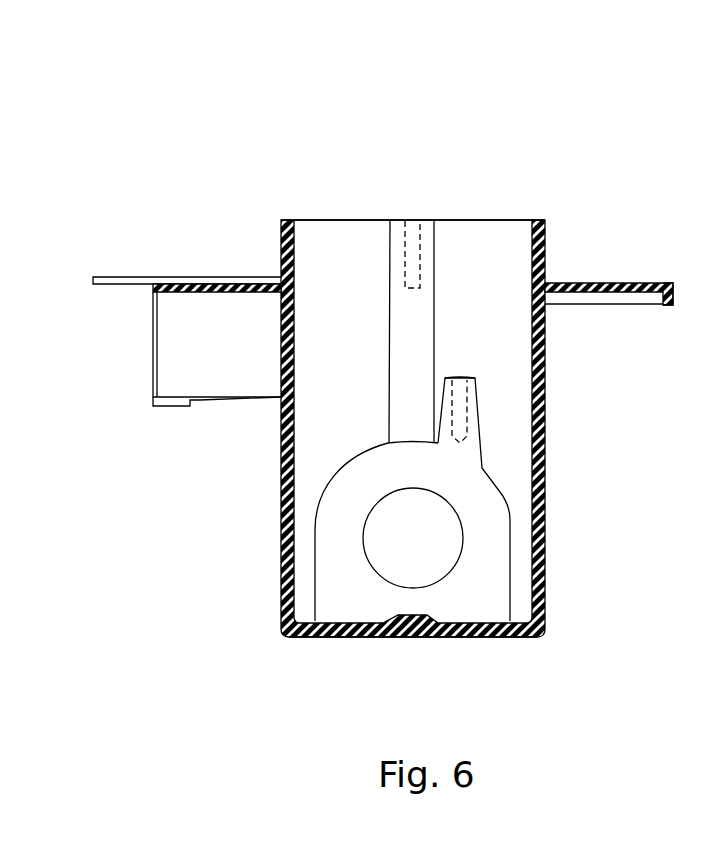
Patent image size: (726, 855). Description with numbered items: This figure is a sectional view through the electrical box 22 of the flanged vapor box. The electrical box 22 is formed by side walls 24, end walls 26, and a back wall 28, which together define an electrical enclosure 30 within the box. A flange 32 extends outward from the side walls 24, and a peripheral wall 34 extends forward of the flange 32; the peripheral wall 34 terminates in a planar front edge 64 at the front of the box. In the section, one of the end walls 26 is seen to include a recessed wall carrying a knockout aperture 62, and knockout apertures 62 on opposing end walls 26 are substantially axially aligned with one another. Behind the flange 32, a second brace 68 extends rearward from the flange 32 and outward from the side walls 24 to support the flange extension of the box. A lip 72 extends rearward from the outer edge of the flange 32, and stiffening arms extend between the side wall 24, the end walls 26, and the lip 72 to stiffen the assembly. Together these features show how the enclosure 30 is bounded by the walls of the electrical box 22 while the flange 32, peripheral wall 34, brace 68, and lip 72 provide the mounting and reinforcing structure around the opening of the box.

The electrical box 22 is at (233, 150).
The side walls 24 is at (545, 392).
The end walls 26 is at (498, 339).
The back wall 28 is at (460, 637).
The electrical enclosure 30 is at (343, 230).
The flange 32 is at (596, 283).
The peripheral wall 34 is at (281, 247).
The knockout aperture 62 is at (426, 546).
The planar front edge 64 is at (453, 220).
The second brace 68 is at (230, 353).
The lip 72 is at (675, 296).